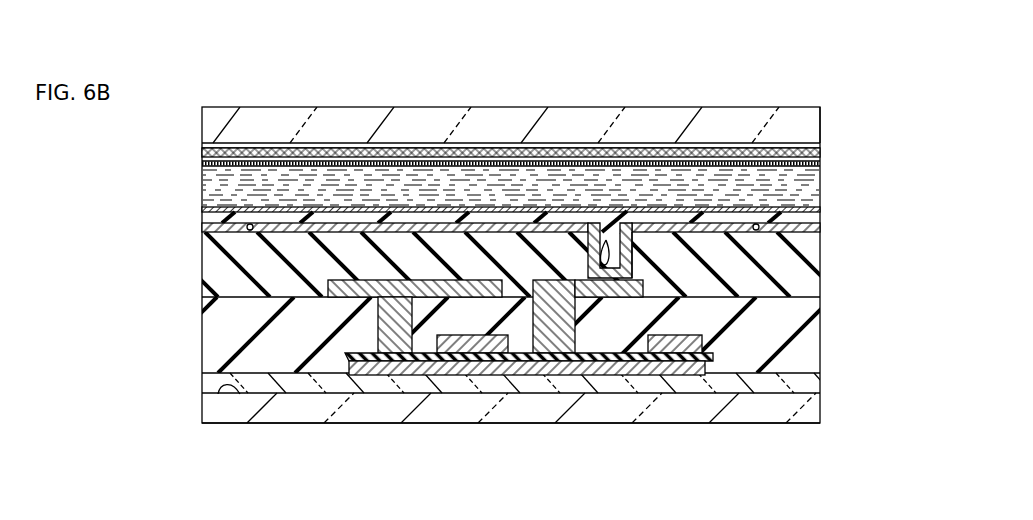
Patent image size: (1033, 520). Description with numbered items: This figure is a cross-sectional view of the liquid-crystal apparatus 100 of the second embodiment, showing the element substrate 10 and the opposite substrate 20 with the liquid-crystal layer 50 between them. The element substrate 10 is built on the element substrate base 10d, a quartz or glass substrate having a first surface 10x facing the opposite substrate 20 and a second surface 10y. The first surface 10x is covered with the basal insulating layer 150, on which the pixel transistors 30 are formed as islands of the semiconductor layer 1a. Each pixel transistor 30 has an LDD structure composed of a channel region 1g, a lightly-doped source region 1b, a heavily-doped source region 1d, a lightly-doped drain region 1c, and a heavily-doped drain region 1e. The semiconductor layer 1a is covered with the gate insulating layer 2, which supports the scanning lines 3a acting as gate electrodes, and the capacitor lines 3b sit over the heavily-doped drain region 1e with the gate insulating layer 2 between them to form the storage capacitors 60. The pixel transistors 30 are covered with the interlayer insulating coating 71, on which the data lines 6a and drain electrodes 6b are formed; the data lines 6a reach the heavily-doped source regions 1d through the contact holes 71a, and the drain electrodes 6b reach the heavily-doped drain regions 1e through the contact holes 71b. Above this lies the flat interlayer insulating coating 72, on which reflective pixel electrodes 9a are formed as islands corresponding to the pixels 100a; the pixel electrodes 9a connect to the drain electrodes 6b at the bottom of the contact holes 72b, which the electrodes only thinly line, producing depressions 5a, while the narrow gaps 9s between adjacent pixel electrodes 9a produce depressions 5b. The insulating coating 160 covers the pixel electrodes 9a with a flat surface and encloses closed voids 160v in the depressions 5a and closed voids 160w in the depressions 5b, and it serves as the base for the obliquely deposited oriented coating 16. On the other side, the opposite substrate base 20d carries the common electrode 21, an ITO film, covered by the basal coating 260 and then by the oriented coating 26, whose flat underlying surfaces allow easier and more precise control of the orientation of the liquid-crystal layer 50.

The liquid-crystal apparatus 100 is at (822, 78).
The pixels 100a is at (350, 128).
The opposite substrate 20 is at (190, 165).
The opposite substrate base 20d is at (813, 125).
The common electrode 21 is at (822, 144).
The basal coating 260 is at (822, 152).
The oriented coating 26 is at (822, 161).
The liquid-crystal layer 50 is at (822, 186).
The oriented coating 16 is at (822, 210).
The insulating coating 160 is at (822, 228).
The pixel electrodes 9a is at (212, 222).
The interlayer insulating coating 72 is at (822, 262).
The interlayer insulating coating 71 is at (822, 336).
The basal insulating layer 150 is at (822, 384).
The element substrate base 10d is at (822, 410).
The element substrate 10 is at (194, 426).
The voids 160w is at (251, 224).
The depressions 5b is at (258, 227).
The contact holes 72b is at (601, 258).
The voids 160v is at (634, 250).
The gaps 9s is at (234, 233).
The data lines 6a is at (330, 281).
The contact holes 71a is at (395, 298).
The contact holes 71b is at (545, 312).
The depressions 5a is at (619, 264).
The drain electrodes 6b is at (640, 285).
The scanning lines 3a is at (462, 335).
The capacitor lines 3b is at (678, 336).
The gate insulating layer 2 is at (606, 374).
The semiconductor layer 1a is at (357, 390).
The heavily-doped source region 1d is at (379, 374).
The lightly-doped source region 1b is at (421, 374).
The channel region 1g is at (457, 374).
The lightly-doped drain region 1c is at (503, 374).
The heavily-doped drain region 1e is at (535, 374).
The pixel transistors 30 is at (496, 398).
The storage capacitors 60 is at (682, 386).
The first surface 10x is at (224, 393).
The second surface 10y is at (262, 424).